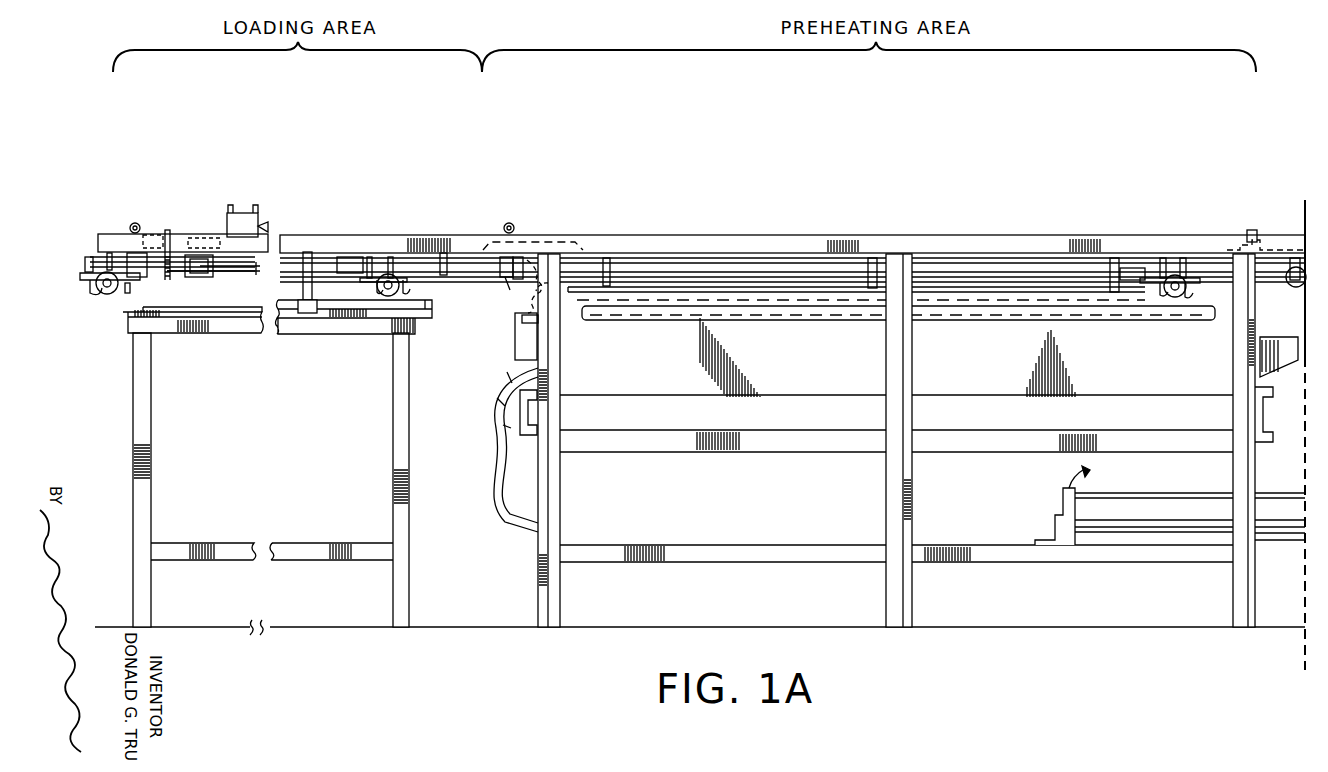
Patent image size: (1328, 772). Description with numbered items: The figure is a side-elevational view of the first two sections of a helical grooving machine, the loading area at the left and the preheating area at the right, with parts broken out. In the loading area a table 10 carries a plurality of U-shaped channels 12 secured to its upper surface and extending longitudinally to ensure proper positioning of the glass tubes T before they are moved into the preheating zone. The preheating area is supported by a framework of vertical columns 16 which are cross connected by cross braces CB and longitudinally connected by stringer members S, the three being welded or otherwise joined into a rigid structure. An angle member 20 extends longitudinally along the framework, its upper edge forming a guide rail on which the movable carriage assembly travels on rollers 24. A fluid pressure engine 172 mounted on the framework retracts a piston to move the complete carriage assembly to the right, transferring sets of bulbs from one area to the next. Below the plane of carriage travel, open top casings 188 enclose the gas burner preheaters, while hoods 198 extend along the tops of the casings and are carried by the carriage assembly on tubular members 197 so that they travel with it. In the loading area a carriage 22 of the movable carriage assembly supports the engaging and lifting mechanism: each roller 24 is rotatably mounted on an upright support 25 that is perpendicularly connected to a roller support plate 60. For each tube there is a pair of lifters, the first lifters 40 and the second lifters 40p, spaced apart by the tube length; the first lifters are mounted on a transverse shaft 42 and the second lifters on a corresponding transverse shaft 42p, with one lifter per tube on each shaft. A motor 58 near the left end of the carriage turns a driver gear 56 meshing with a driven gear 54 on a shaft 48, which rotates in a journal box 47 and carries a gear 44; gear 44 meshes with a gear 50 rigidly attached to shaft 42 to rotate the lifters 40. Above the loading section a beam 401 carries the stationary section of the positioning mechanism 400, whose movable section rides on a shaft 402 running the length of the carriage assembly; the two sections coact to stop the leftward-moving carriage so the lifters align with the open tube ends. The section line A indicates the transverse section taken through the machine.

The table 10 is at (133, 428).
The U-shaped channels 12 is at (216, 308).
The vertical columns 16 is at (560, 500).
The angle member 20 is at (373, 243).
The carriage 22 is at (96, 242).
The rollers 24 is at (135, 222).
The upright support 25 is at (140, 262).
The lifters 40 is at (90, 283).
The lifters 40p is at (410, 285).
The shaft 42 is at (108, 294).
The shaft 42p is at (390, 292).
The gear 44 is at (108, 262).
The journal box 47 is at (88, 262).
The shaft 48 is at (440, 272).
The gear 50 is at (100, 291).
The driven gear 54 is at (172, 275).
The driver gear 56 is at (172, 236).
The motor 58 is at (150, 245).
The roller support plate 60 is at (120, 282).
The fluid pressure engine 172 is at (1160, 510).
The open top casings 188 is at (797, 386).
The tubular members 197 is at (655, 288).
The hoods 198 is at (790, 302).
The positioning mechanism 400 is at (262, 230).
The beam 401 is at (237, 213).
The shaft 402 is at (258, 268).
The section line A- A is at (1307, 438).
The cross braces CB is at (537, 410).
The stringer members S is at (745, 448).
The glass tubes T is at (425, 306).